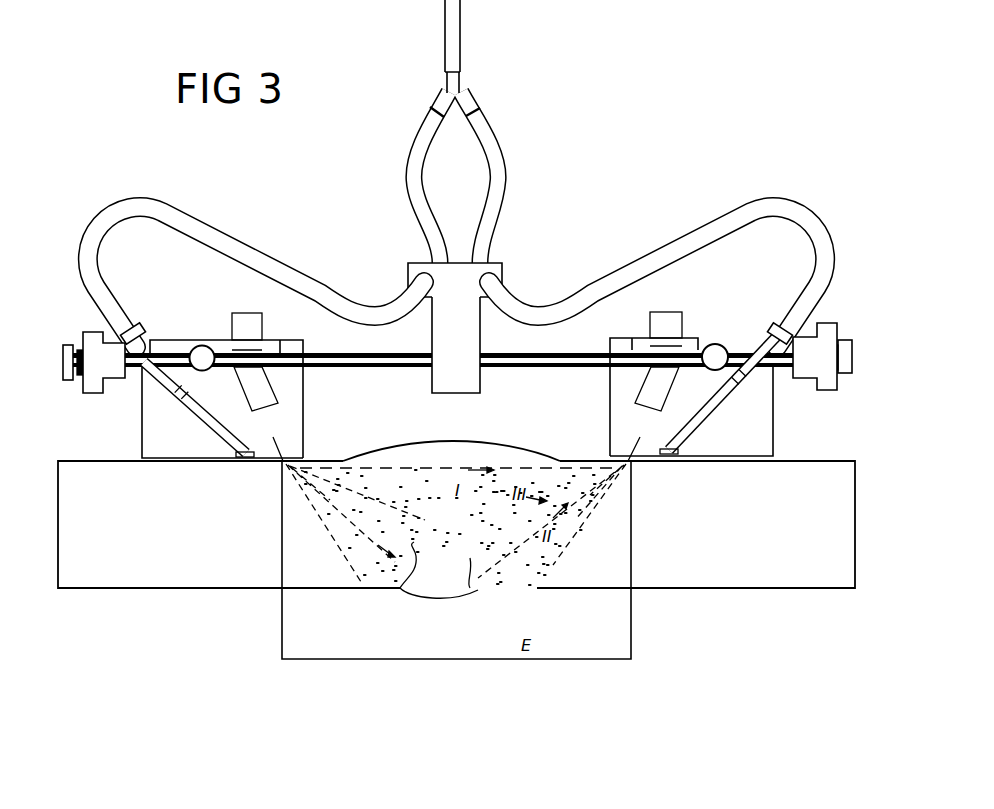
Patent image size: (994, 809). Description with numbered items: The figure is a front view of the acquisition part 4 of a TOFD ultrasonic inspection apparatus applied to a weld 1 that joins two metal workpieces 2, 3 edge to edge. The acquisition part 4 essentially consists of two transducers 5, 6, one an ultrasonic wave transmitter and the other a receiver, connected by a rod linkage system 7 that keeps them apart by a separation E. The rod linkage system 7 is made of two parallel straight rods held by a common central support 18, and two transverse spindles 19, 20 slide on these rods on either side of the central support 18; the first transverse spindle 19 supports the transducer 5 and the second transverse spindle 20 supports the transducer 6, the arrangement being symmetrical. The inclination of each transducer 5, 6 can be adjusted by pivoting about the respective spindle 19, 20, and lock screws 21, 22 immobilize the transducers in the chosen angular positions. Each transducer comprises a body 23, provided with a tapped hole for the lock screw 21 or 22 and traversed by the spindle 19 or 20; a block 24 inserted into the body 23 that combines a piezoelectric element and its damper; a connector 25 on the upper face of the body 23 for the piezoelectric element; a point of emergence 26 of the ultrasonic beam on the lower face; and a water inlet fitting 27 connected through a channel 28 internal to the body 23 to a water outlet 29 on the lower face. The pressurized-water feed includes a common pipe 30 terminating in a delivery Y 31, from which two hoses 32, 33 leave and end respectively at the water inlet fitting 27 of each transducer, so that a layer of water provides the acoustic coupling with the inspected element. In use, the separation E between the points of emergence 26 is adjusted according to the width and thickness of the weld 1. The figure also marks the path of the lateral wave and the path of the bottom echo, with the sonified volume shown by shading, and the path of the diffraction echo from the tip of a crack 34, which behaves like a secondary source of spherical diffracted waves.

The weld 1 is at (471, 594).
The metal workpiece 2 is at (133, 575).
The metal workpiece 3 is at (802, 578).
The acquisition part 4 is at (647, 151).
The transducer 5 is at (142, 440).
The transducer 6 is at (778, 437).
The rod linkage system 7 is at (540, 348).
The central support 18 is at (470, 372).
The transverse spindle 19 is at (202, 345).
The transverse spindle 20 is at (719, 344).
The lock screw 21 is at (86, 333).
The lock screw 22 is at (648, 388).
The body 23 is at (612, 429).
The block 24 is at (262, 390).
The connector 25 is at (666, 326).
The point of emergence 26 is at (630, 464).
The water inlet fitting 27 is at (772, 328).
The channel 28 is at (720, 403).
The water outlet 29 is at (674, 458).
The common pipe 30 is at (445, 30).
The delivery Y 31 is at (445, 92).
The hose 32 is at (206, 232).
The hose 33 is at (767, 200).
The crack 34 is at (400, 589).